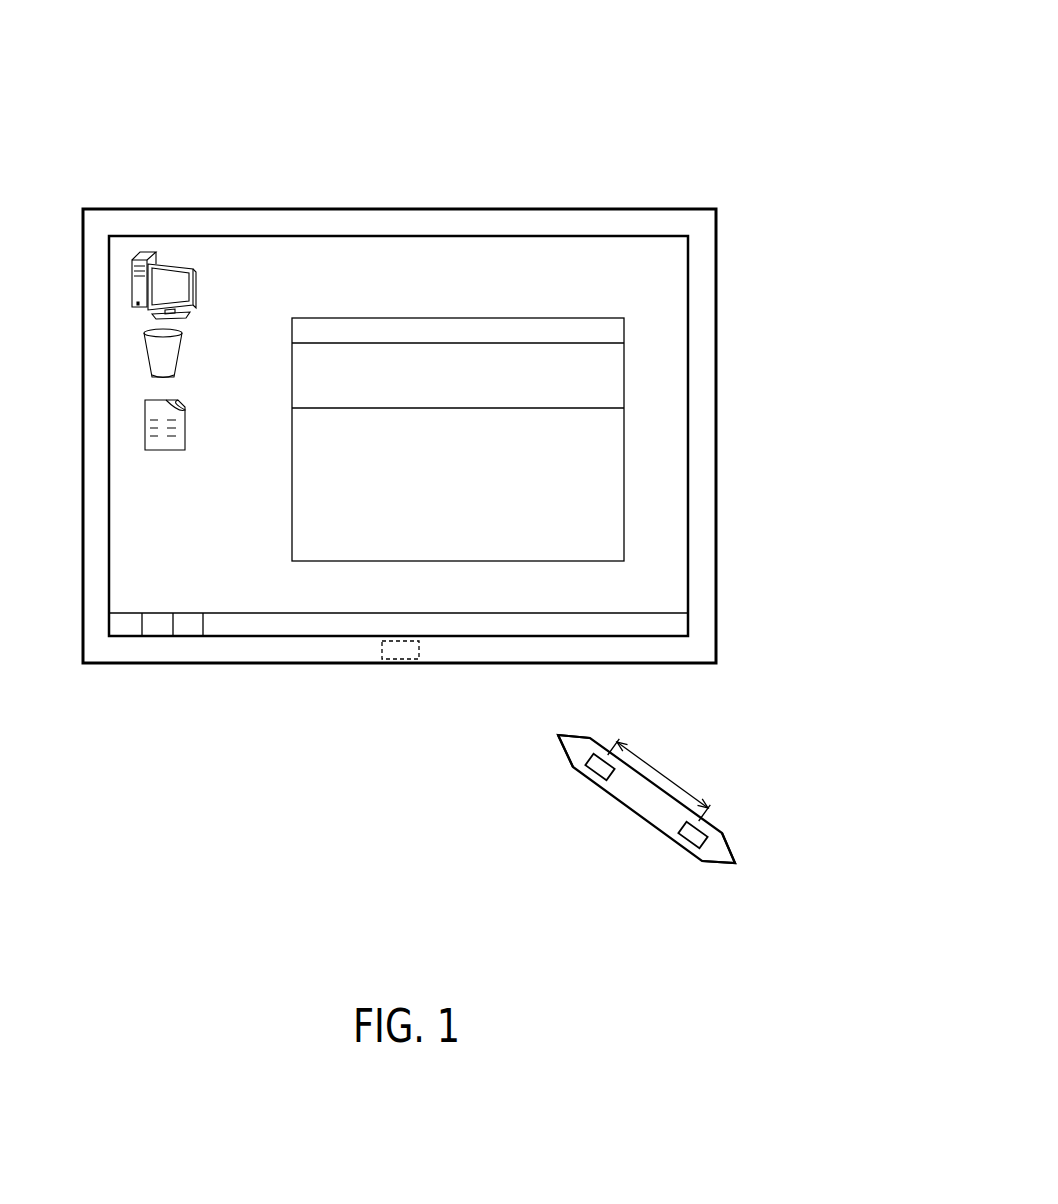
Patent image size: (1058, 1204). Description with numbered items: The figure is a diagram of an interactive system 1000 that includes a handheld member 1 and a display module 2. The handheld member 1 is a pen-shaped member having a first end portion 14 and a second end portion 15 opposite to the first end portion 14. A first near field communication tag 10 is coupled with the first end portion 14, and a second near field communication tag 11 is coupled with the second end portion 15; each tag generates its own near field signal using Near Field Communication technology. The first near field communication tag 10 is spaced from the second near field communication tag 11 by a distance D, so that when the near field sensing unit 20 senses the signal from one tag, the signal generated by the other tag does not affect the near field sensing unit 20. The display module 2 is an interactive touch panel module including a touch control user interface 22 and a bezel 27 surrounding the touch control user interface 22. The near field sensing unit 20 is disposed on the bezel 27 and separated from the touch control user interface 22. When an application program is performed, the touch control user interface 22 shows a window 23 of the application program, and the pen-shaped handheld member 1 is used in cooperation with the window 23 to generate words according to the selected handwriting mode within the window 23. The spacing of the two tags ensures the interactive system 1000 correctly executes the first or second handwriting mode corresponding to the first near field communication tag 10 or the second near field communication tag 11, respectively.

The interactive system 1000 is at (602, 70).
The handheld member 1 is at (700, 732).
The display module 2 is at (160, 188).
The first near field communication tag 10 is at (598, 768).
The second near field communication tag 11 is at (689, 835).
The first end portion 14 is at (570, 743).
The second end portion 15 is at (728, 862).
The near field sensing unit 20 is at (396, 655).
The touch control user interface 22 is at (546, 276).
The window 23 is at (594, 489).
The bezel 27 is at (310, 652).